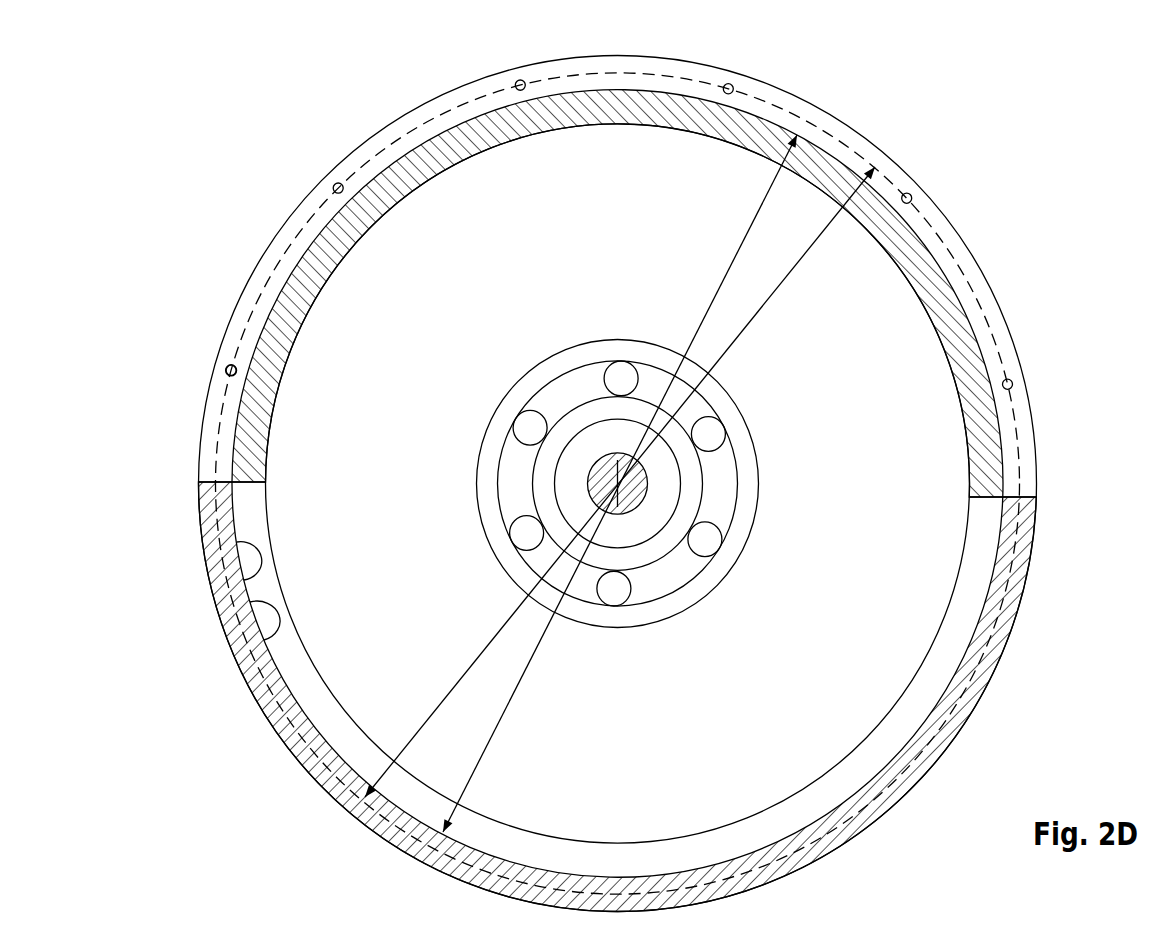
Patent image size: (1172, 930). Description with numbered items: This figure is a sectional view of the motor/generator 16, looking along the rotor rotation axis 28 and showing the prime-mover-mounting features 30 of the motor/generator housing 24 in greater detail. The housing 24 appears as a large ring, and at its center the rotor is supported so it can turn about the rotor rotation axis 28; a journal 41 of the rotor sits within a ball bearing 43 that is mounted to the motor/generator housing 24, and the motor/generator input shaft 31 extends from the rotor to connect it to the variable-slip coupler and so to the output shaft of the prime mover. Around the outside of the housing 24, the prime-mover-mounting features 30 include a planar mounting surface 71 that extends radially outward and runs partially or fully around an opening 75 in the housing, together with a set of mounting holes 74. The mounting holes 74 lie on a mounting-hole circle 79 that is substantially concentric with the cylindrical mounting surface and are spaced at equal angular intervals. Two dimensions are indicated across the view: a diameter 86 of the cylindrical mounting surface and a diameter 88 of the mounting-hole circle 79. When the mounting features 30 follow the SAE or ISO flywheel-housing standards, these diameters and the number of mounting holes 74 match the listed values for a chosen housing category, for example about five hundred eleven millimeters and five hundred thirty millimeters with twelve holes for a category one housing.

The motor/generator 16 is at (975, 178).
The motor/generator housing 24 is at (998, 298).
The rotor rotation axis 28 is at (595, 483).
The prime-mover-mounting features 30 is at (228, 366).
The motor/generator input shaft 31 is at (632, 503).
The journal 41 is at (680, 467).
The ball bearing 43 is at (750, 560).
The mounting surface 71 is at (252, 285).
The mounting holes 74 is at (745, 84).
The opening 75 is at (907, 355).
The mounting-hole circle 79 is at (933, 222).
The diameter of mounting surface 86 is at (743, 231).
The diameter of mounting-hole circle 88 is at (768, 301).